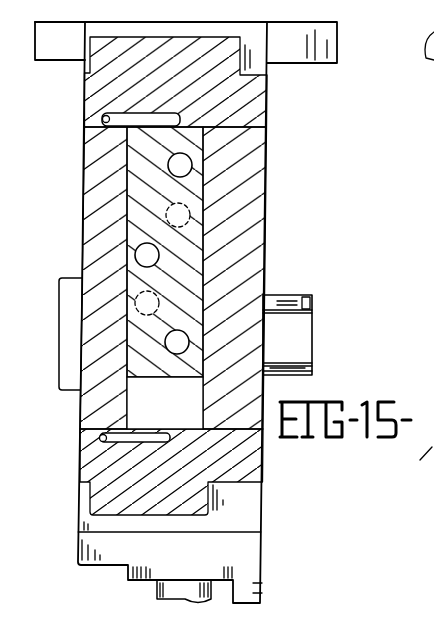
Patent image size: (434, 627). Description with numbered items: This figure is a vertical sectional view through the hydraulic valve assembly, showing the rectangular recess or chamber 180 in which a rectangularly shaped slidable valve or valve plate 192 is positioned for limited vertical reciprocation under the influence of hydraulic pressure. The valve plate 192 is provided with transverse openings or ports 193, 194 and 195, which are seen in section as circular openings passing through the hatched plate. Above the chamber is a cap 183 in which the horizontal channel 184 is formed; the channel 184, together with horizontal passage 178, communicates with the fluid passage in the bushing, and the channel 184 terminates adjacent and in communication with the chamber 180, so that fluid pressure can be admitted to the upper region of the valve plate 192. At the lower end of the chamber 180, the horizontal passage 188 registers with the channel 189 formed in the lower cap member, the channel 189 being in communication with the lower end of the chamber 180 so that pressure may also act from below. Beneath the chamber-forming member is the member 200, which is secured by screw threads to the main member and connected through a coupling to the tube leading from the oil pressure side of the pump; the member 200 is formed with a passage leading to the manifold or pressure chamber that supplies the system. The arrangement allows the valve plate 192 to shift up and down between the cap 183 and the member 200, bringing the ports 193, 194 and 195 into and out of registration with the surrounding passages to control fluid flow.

The horizontal passage 178 is at (101, 118).
The rectangular recess or chamber 180 is at (130, 398).
The cap 183 is at (253, 99).
The horizontal passage or channel 184 is at (133, 112).
The horizontal passage 188 is at (100, 438).
The channel 189 is at (132, 438).
The slidable valve or valve plate 192 is at (203, 240).
The transverse opening or port 193 is at (192, 164).
The transverse opening or port 194 is at (148, 253).
The transverse opening or port 195 is at (187, 335).
The member 200 is at (250, 473).